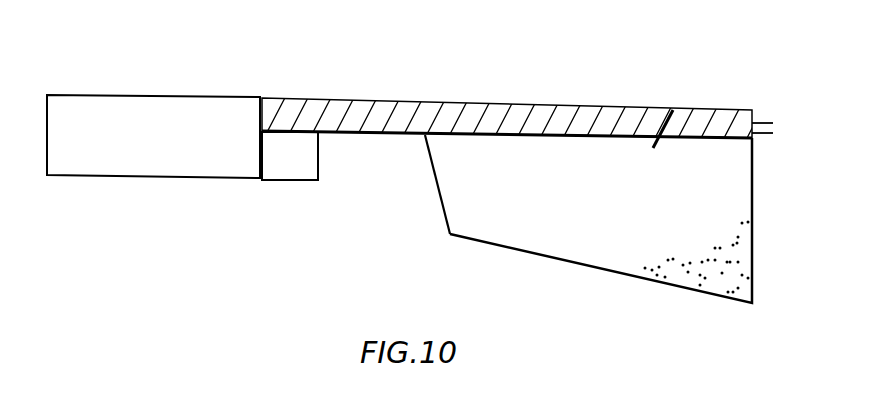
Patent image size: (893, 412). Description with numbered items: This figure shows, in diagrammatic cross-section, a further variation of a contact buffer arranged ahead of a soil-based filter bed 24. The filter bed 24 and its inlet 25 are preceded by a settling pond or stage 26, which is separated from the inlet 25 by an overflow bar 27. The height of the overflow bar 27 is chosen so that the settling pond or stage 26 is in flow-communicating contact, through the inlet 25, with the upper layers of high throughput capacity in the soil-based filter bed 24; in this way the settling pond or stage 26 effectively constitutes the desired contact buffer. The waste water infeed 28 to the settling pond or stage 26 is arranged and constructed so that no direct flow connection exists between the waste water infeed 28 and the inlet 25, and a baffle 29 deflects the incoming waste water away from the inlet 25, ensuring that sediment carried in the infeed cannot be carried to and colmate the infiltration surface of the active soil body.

The soil-based filter bed 24 is at (195, 112).
The inlet 25 is at (295, 178).
The settling pond or stage 26 is at (540, 237).
The overflow bar 27 is at (472, 185).
The waste water infeed 28 is at (768, 122).
The baffle 29 is at (662, 112).